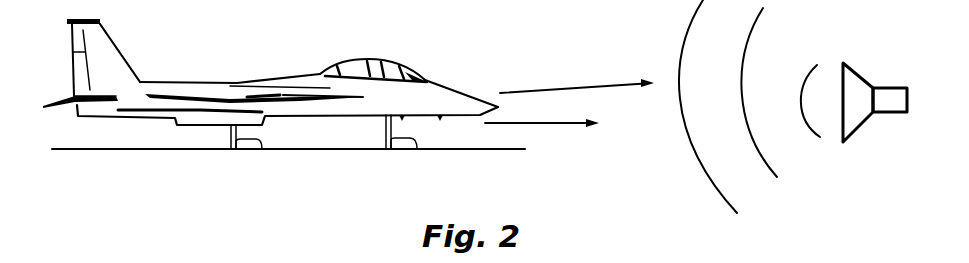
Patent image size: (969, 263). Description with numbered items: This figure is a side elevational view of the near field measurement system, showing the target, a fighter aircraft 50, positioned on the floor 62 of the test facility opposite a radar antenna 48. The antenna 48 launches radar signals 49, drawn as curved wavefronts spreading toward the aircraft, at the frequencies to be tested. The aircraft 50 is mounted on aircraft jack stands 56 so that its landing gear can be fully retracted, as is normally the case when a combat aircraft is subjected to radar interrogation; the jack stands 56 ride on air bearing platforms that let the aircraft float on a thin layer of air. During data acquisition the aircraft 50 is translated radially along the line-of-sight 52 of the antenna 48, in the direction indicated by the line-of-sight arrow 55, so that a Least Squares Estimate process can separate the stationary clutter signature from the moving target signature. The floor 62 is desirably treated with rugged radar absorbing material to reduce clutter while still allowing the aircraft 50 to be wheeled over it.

The fighter aircraft 50 is at (265, 82).
The aircraft jack stands 56 is at (257, 150).
The floor 62 is at (113, 149).
The line-of-sight arrow 55 is at (550, 123).
The line-of-sight 52 is at (620, 87).
The radar signals 49 is at (820, 137).
The radar antenna 48 is at (850, 122).